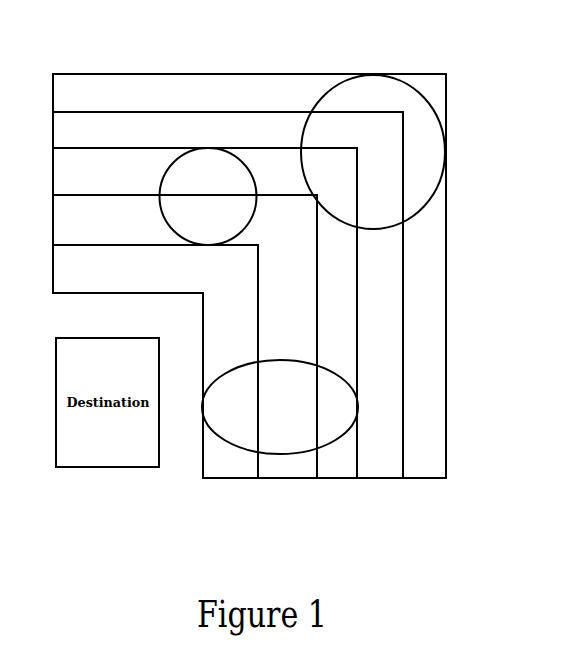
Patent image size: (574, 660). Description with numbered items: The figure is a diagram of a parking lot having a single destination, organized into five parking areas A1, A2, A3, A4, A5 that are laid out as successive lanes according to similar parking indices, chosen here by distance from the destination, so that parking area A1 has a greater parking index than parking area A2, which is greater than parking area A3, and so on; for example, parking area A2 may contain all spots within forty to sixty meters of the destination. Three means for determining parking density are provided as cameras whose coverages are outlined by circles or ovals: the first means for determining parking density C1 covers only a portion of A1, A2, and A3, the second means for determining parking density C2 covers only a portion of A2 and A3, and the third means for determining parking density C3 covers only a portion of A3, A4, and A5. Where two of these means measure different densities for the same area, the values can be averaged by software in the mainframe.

The first means for determining parking density C1 is at (287, 455).
The second means for determining parking density C2 is at (201, 147).
The third means for determining parking density C3 is at (437, 117).
The parking area A1 is at (155, 361).
The parking area A2 is at (185, 336).
The parking area A3 is at (205, 313).
The parking area A4 is at (228, 295).
The parking area A5 is at (249, 276).